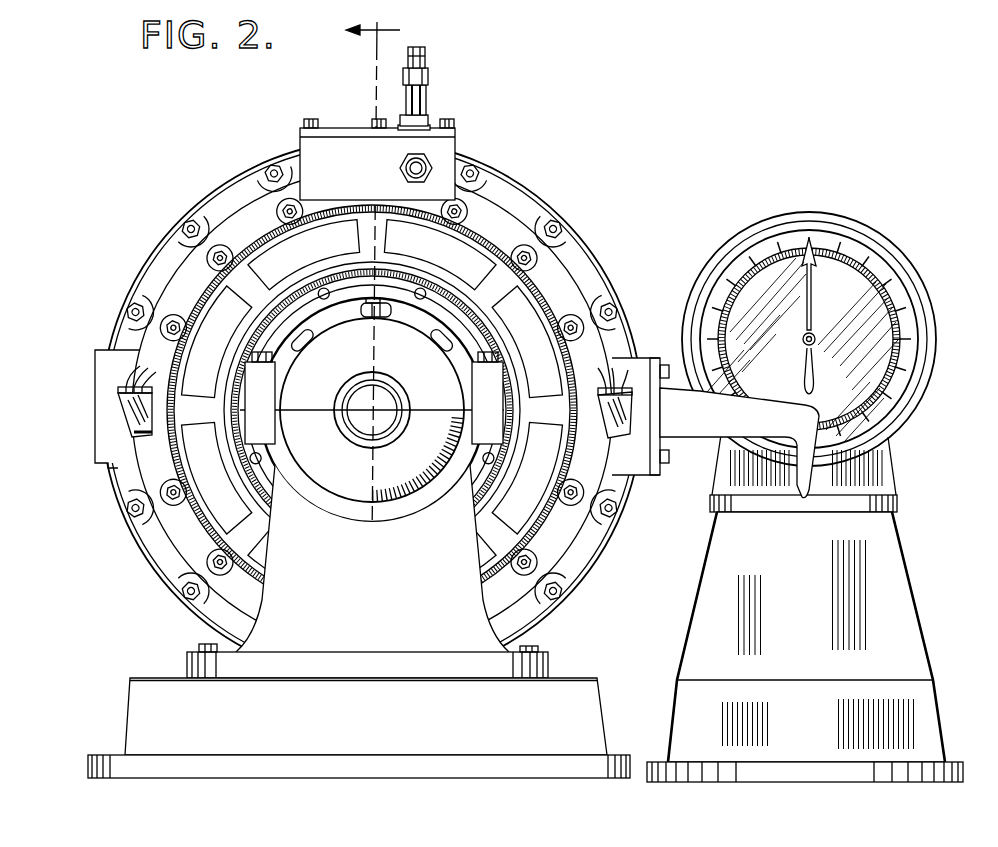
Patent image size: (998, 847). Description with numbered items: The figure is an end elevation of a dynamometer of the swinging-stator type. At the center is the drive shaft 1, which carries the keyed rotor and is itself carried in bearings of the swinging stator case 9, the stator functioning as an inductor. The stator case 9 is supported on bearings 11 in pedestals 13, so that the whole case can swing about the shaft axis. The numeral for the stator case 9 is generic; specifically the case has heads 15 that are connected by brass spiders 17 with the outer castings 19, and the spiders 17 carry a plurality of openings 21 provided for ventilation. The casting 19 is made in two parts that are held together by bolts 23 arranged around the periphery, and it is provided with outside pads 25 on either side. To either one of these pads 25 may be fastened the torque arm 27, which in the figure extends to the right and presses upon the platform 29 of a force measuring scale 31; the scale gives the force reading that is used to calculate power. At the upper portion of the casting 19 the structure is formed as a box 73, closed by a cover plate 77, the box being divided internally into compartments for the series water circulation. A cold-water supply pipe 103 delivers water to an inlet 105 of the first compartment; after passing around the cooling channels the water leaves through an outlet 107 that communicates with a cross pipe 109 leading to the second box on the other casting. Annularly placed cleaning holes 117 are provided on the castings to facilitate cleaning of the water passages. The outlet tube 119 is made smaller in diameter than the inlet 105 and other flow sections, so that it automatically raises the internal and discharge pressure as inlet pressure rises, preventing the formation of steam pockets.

The drive shaft 1 is at (388, 418).
The stator case 9 is at (588, 270).
The bearings 11 is at (332, 474).
The pedestals 13 is at (462, 595).
The heads 15 is at (406, 314).
The brass spiders 17 is at (512, 292).
The outer castings 19 is at (492, 203).
The openings 21 is at (384, 210).
The bolts 23 is at (200, 225).
The outside pads 25 is at (92, 450).
The torque arm 27 is at (706, 432).
The platform 29 is at (876, 496).
The force measuring scale 31 is at (886, 420).
The box 73 is at (455, 153).
The cover plate 77 is at (431, 126).
The cold-water supply pipe 103 is at (400, 168).
The inlet 105 is at (432, 170).
The outlet 107 is at (428, 100).
The cross pipe 109 is at (429, 78).
The cleaning holes 117 is at (142, 376).
The outlet tube 119 is at (411, 50).